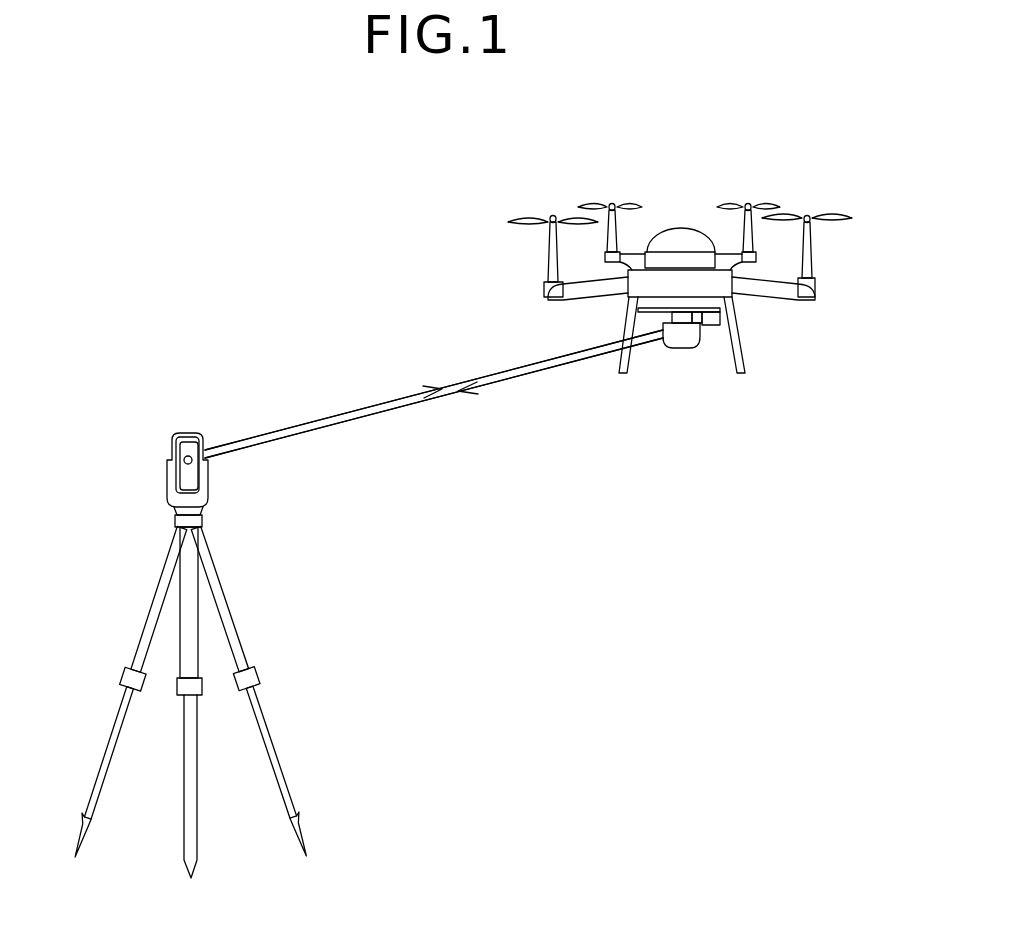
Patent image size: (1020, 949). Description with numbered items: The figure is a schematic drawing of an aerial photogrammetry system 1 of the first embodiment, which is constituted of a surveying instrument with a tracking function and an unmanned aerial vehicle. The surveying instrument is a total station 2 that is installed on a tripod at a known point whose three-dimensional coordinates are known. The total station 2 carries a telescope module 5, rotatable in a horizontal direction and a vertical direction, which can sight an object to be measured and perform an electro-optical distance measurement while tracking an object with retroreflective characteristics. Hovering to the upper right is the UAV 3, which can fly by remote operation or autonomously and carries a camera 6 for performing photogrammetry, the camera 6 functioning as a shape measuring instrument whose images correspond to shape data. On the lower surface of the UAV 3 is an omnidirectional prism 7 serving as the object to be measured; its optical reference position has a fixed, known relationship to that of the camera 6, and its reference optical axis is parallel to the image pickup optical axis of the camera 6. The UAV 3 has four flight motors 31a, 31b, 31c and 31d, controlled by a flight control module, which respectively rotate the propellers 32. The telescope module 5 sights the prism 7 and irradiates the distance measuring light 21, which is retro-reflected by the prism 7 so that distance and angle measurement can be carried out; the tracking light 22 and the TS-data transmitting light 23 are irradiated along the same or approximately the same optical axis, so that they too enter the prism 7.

The aerial photogrammetry system 1 is at (343, 233).
The total station 2 is at (160, 473).
The UAV 3 is at (678, 226).
The telescope module 5 is at (190, 440).
The camera 6 is at (708, 325).
The prism 7 is at (680, 348).
The distance measuring light 21 is at (357, 410).
The tracking light 22 is at (434, 380).
The TS-data transmitting light 23 is at (434, 380).
The flight motor 31a is at (545, 292).
The flight motor 31b is at (817, 290).
The flight motor 31c is at (755, 255).
The flight motor 31d is at (605, 258).
The propellers 32 is at (595, 203).